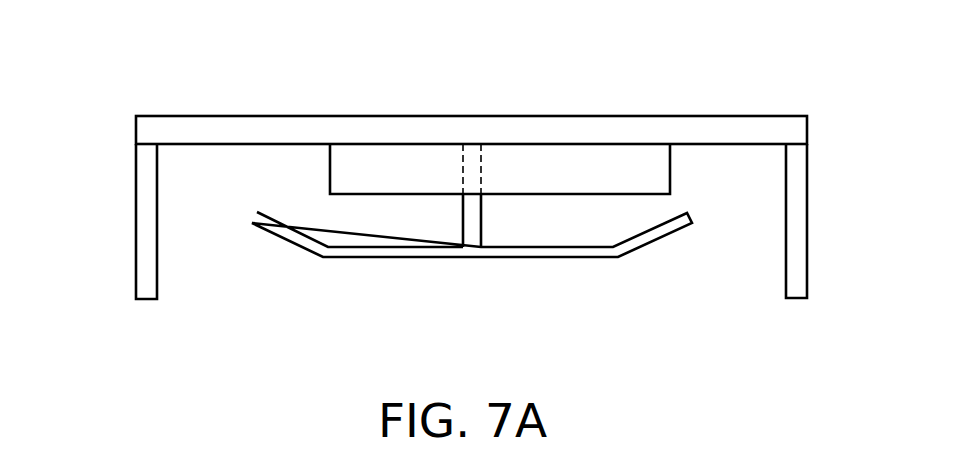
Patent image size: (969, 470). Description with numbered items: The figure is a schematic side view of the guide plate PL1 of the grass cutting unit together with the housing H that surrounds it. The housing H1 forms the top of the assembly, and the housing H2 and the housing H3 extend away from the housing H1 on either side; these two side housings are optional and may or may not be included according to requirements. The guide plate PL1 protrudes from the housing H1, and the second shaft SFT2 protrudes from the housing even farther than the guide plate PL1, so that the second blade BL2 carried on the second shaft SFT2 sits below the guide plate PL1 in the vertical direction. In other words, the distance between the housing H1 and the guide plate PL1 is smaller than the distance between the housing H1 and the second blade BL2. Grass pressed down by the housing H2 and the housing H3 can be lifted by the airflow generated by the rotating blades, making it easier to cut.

The housing H is at (472, 173).
The housing H1 is at (740, 124).
The housing H2 is at (145, 213).
The housing H3 is at (797, 213).
The guide plate PL1 is at (577, 172).
The second shaft SFT2 is at (470, 217).
The second blade BL2 is at (577, 253).